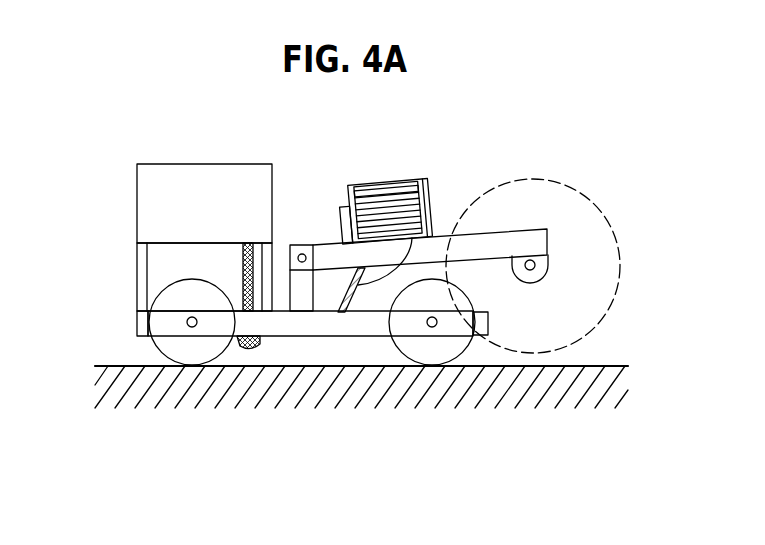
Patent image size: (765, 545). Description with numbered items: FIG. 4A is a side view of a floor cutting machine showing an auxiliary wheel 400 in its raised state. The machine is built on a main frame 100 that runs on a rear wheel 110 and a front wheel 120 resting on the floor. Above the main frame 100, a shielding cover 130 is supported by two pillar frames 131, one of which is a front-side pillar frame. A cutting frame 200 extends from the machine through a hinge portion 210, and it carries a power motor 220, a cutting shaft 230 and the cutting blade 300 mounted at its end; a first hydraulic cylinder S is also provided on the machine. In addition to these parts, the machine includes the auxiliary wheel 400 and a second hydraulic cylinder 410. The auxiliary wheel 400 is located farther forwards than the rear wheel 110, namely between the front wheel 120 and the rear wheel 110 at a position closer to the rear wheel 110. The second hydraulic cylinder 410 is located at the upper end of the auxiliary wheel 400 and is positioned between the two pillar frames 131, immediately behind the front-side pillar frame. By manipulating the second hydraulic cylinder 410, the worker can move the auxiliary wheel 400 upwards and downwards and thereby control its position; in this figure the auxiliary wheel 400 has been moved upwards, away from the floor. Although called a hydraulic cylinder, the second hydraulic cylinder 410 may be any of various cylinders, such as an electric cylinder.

The main frame 100 is at (137, 330).
The rear wheel 110 is at (160, 364).
The front wheel 120 is at (400, 370).
The shielding cover 130 is at (137, 208).
The pillar frame 131 is at (137, 283).
The cutting frame 200 is at (313, 243).
The hinge portion 210 is at (301, 254).
The power motor 220 is at (383, 188).
The cutting shaft 230 is at (531, 261).
The cutting blade 300 is at (587, 196).
The auxiliary wheel 400 is at (260, 348).
The second hydraulic cylinder 410 is at (243, 268).
The first hydraulic cylinder S is at (423, 178).